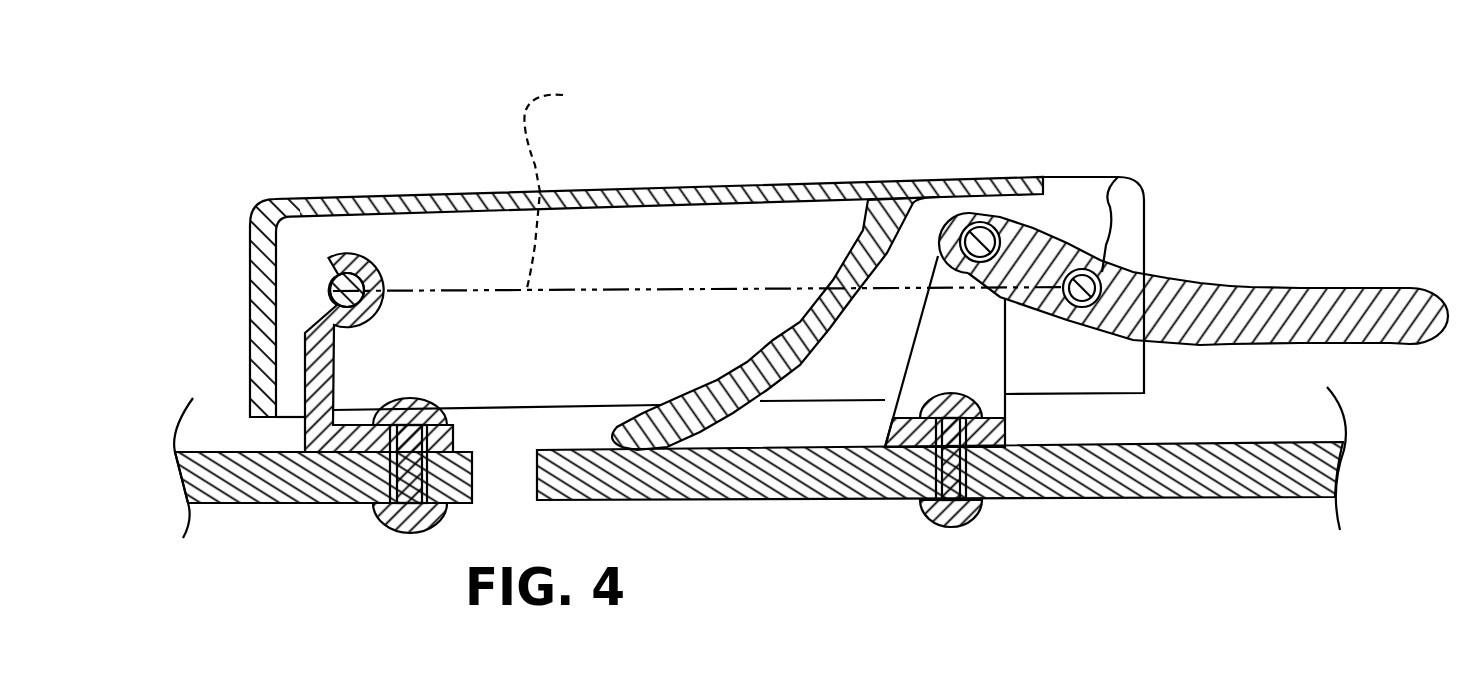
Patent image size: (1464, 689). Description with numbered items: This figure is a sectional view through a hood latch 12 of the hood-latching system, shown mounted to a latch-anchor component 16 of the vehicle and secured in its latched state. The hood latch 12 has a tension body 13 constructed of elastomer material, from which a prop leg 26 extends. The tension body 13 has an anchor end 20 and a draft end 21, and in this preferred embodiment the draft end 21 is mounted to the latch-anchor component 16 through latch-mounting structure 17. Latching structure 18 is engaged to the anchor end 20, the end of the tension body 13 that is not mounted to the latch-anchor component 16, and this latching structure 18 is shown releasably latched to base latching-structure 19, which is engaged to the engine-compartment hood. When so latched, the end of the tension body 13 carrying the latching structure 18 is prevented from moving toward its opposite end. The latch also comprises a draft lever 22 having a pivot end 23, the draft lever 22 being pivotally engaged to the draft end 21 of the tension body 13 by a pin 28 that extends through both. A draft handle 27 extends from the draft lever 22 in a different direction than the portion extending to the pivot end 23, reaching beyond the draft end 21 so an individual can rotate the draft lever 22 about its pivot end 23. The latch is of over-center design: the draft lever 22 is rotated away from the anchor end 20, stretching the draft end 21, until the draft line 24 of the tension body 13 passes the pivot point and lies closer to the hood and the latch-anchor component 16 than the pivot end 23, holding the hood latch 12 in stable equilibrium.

The hood latch 12 is at (655, 187).
The tension body 13 is at (750, 185).
The latch-anchor component 16 is at (1110, 480).
The latch-mounting structure 17 is at (923, 360).
The latching structure 18 is at (336, 276).
The base latching-structure 19 is at (370, 270).
The anchor end 20 is at (248, 246).
The draft end 21 is at (1040, 177).
The draft lever 22 is at (1060, 250).
The pivot end 23 is at (1022, 242).
The draft line 24 is at (709, 183).
The prop leg 26 is at (787, 370).
The draft handle 27 is at (1242, 300).
The pin 28 is at (1097, 270).